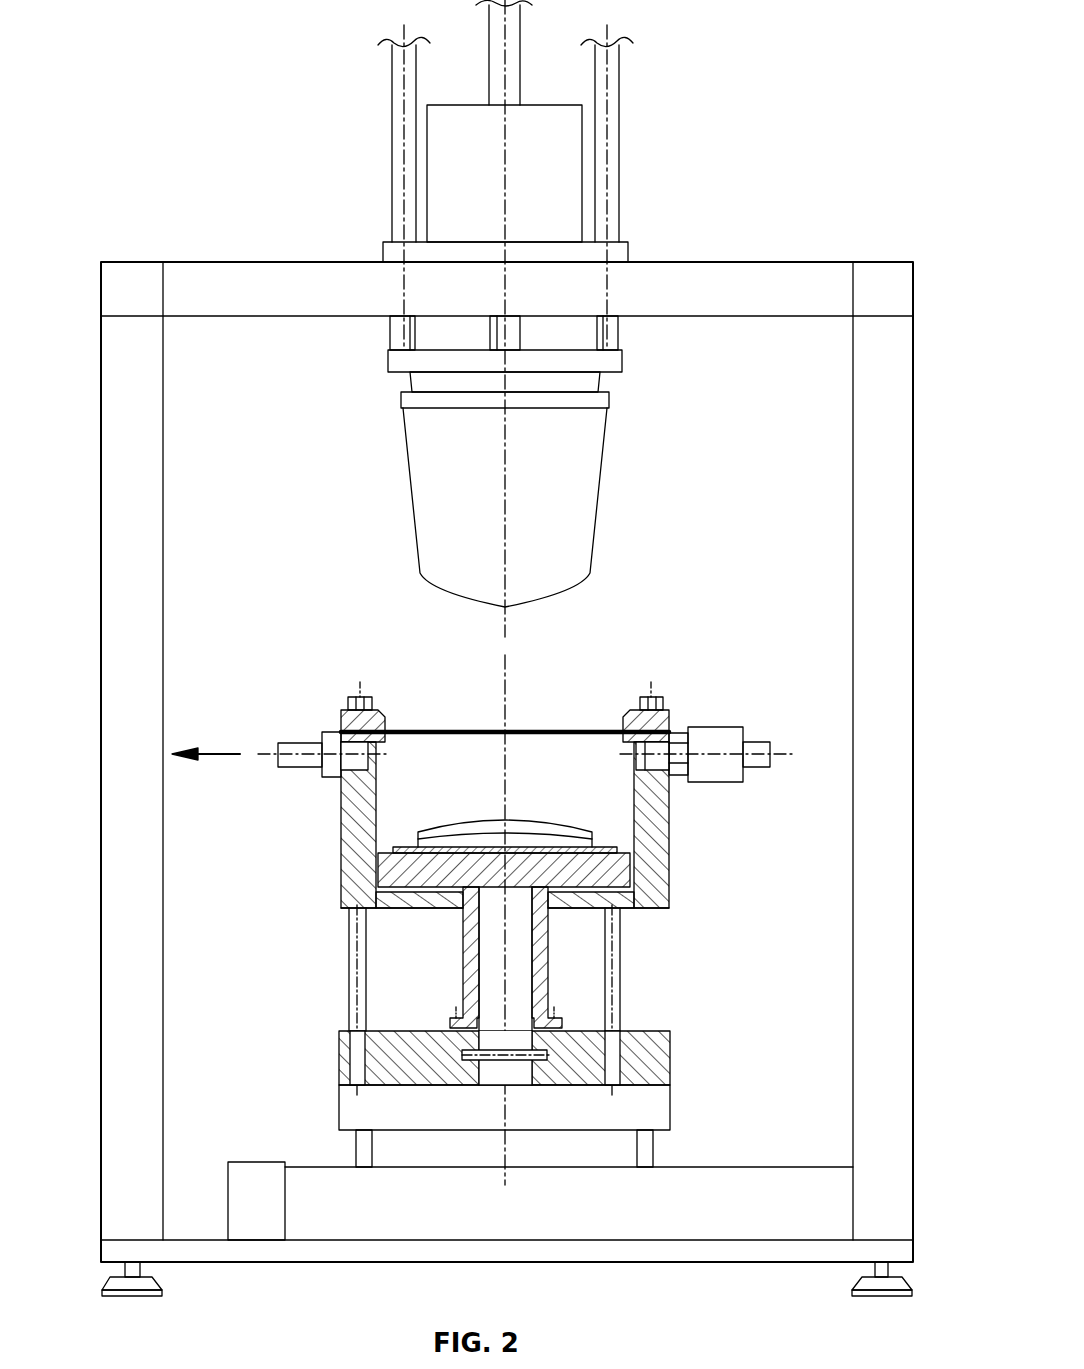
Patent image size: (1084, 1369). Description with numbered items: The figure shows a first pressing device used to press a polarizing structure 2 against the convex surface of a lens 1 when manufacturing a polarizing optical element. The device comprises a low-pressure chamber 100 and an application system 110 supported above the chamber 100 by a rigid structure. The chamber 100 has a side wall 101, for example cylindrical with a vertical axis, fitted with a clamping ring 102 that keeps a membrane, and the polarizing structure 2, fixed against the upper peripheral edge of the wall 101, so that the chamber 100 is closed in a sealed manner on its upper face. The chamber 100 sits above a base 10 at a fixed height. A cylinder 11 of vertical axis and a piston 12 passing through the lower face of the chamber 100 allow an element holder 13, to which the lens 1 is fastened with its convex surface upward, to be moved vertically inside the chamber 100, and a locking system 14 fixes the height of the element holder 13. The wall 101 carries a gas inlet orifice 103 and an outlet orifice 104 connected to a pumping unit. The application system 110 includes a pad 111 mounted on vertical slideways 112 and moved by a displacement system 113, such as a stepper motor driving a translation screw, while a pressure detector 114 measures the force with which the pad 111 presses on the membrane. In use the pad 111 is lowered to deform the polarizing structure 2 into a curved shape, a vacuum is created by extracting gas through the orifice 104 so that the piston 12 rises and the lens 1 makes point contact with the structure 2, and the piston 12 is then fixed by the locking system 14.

The lens 1 is at (418, 830).
The polarizing structure 2 is at (432, 730).
The base 10 is at (655, 1102).
The cylinder 11 is at (513, 955).
The piston 12 is at (622, 867).
The element holder 13 is at (402, 850).
The locking system 14 is at (553, 1053).
The low-pressure chamber 100 is at (692, 666).
The side wall 101 is at (358, 785).
The clamping ring 102 is at (627, 717).
The gas inlet orifice 103 is at (728, 733).
The outlet orifice 104 is at (294, 748).
The application system 110 is at (783, 53).
The pad 111 is at (608, 440).
The vertical slideways 112 is at (412, 153).
The displacement system 113 is at (570, 167).
The pressure detector 114 is at (583, 383).